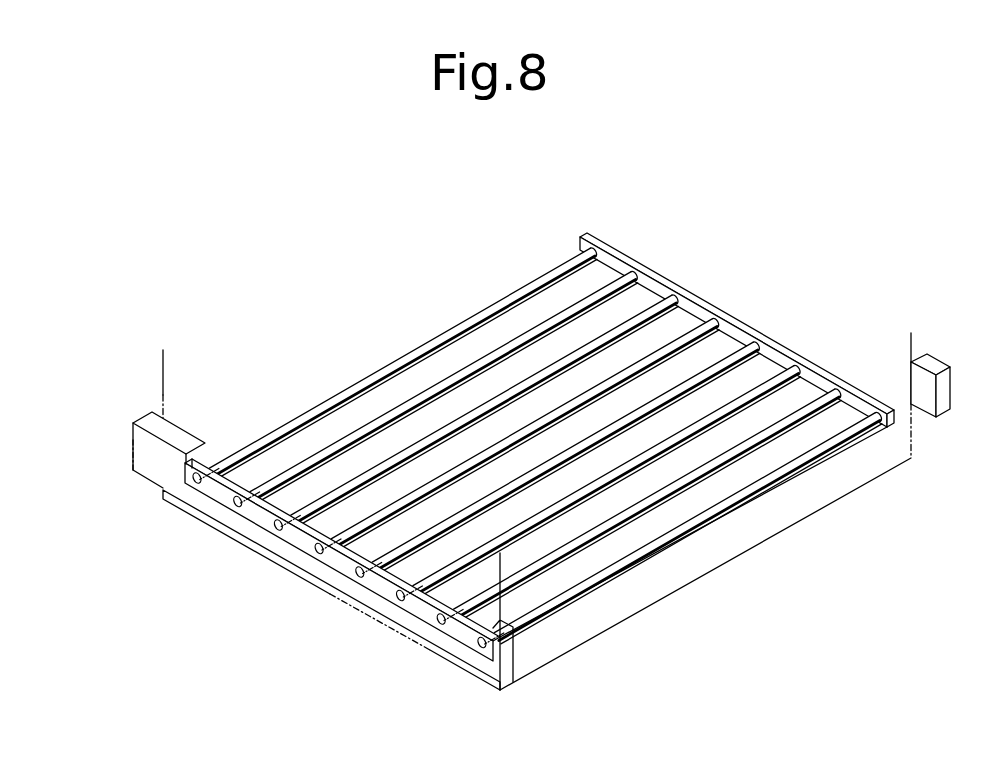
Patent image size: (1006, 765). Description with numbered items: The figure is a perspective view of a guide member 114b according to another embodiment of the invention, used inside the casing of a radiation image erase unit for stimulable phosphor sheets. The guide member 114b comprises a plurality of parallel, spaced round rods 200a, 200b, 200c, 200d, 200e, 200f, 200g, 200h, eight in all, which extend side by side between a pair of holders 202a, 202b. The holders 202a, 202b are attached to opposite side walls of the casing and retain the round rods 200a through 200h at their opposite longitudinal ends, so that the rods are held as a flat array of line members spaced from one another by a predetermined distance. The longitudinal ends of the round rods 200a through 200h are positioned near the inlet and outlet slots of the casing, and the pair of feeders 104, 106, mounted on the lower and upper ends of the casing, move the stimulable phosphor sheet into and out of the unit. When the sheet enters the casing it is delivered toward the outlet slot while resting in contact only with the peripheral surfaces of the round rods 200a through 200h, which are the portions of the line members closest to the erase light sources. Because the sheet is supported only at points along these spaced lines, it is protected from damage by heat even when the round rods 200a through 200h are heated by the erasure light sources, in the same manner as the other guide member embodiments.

The feeder 104 is at (948, 404).
The feeder 106 is at (157, 462).
The guide member 114b is at (735, 514).
The round rod 200a is at (623, 563).
The round rod 200b is at (630, 512).
The round rod 200c is at (663, 448).
The round rod 200d is at (673, 392).
The round rod 200e is at (433, 487).
The round rod 200f is at (553, 368).
The round rod 200g is at (417, 394).
The round rod 200h is at (447, 335).
The holder 202a is at (827, 366).
The holder 202b is at (341, 558).